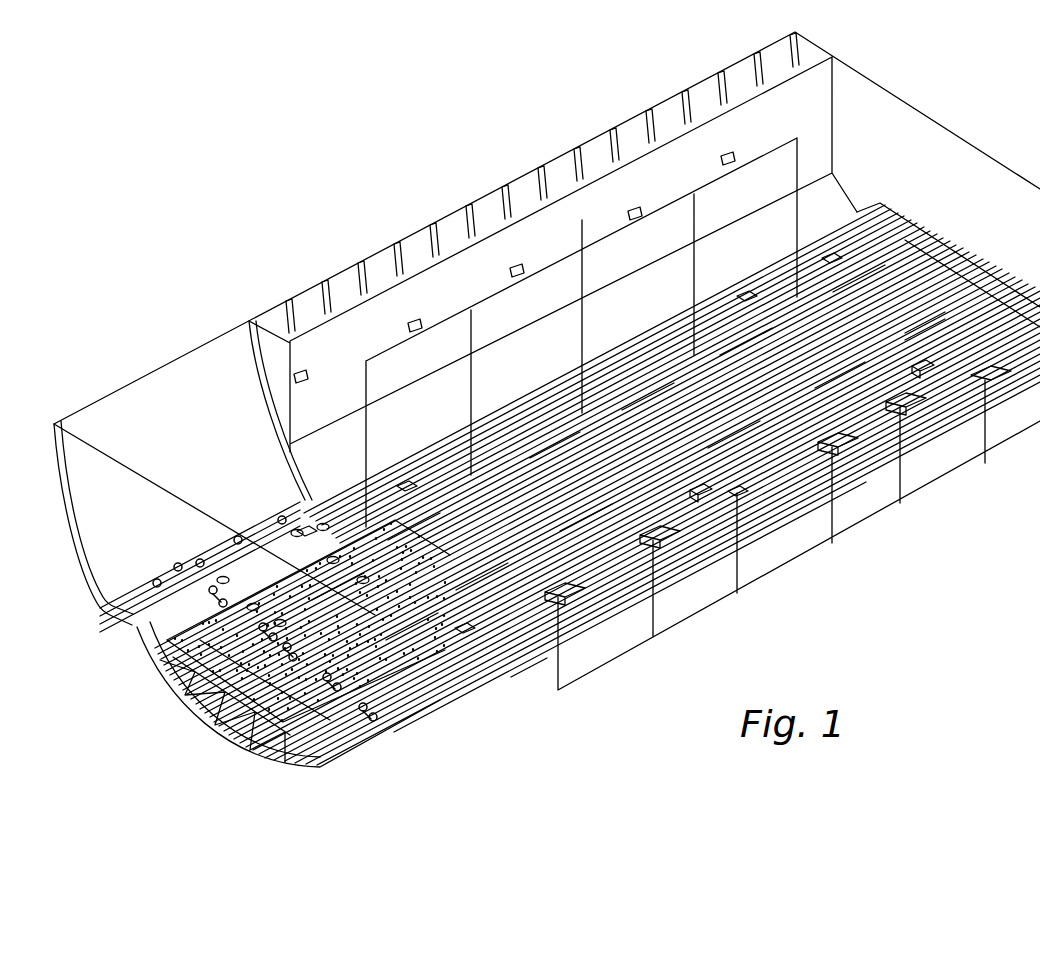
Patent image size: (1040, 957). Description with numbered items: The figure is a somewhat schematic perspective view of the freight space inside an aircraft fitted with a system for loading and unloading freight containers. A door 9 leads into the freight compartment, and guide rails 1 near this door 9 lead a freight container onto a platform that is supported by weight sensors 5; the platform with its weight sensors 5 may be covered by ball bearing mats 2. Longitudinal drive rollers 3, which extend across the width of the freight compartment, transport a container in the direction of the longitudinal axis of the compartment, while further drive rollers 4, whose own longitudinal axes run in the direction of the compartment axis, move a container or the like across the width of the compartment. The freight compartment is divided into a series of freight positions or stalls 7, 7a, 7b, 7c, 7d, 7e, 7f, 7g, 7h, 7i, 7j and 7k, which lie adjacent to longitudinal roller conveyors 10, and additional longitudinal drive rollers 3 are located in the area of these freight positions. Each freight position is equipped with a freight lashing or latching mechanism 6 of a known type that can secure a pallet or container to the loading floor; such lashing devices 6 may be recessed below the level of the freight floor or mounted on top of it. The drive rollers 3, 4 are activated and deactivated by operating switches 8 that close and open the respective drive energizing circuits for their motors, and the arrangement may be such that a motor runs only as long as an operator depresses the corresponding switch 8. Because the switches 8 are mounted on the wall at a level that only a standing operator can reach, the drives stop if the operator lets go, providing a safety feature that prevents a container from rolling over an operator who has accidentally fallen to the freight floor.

The guide rails 1 is at (233, 533).
The ball bearing mats 2 is at (207, 657).
The longitudinal drive rollers 3 is at (463, 640).
The drive rollers 4 is at (395, 672).
The weight sensors 5 is at (270, 532).
The freight lashing or latching mechanism 6 is at (918, 368).
The freight position or stall 7 is at (937, 342).
The freight position or stall 7a is at (853, 391).
The freight position or stall 7b is at (745, 450).
The freight position or stall 7c is at (598, 531).
The freight position or stall 7d is at (494, 590).
The freight position or stall 7e is at (424, 640).
The freight position or stall 7f is at (868, 293).
The freight position or stall 7g is at (757, 355).
The freight position or stall 7h is at (659, 411).
The freight position or stall 7i is at (562, 458).
The freight position or stall 7j is at (420, 540).
The freight position or stall 7k is at (348, 600).
The switches 8 is at (720, 165).
The door 9 is at (84, 547).
The longitudinal roller conveyors 10 is at (953, 262).